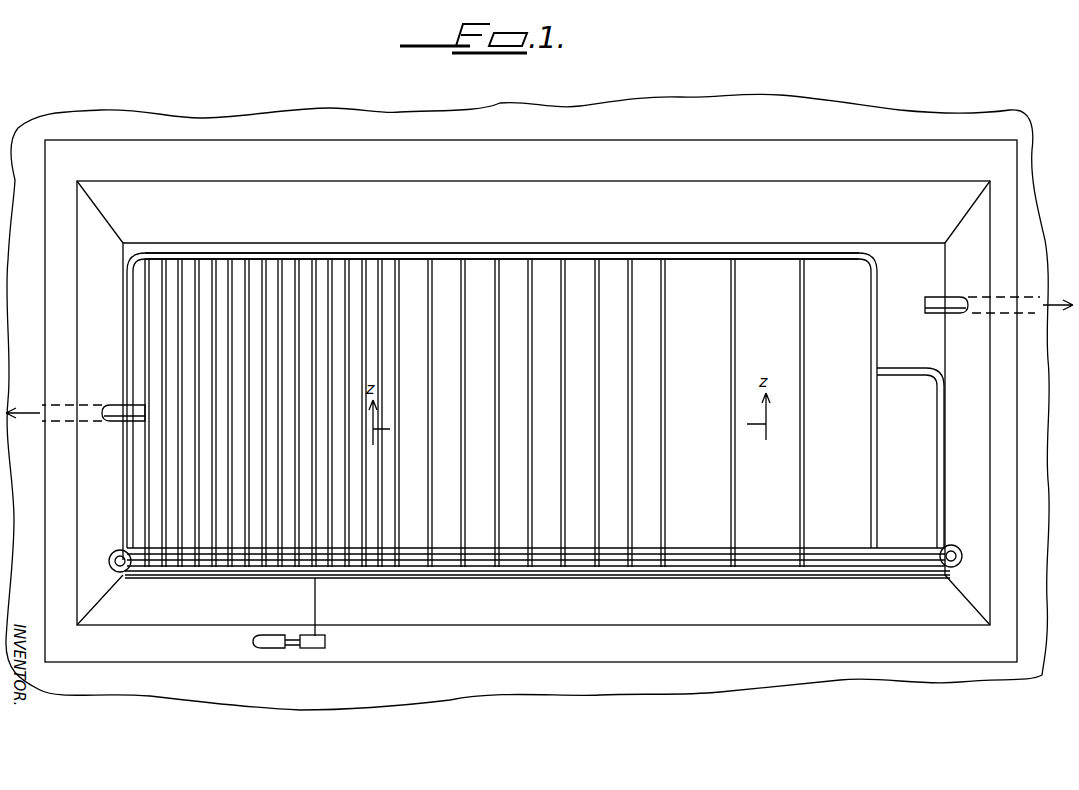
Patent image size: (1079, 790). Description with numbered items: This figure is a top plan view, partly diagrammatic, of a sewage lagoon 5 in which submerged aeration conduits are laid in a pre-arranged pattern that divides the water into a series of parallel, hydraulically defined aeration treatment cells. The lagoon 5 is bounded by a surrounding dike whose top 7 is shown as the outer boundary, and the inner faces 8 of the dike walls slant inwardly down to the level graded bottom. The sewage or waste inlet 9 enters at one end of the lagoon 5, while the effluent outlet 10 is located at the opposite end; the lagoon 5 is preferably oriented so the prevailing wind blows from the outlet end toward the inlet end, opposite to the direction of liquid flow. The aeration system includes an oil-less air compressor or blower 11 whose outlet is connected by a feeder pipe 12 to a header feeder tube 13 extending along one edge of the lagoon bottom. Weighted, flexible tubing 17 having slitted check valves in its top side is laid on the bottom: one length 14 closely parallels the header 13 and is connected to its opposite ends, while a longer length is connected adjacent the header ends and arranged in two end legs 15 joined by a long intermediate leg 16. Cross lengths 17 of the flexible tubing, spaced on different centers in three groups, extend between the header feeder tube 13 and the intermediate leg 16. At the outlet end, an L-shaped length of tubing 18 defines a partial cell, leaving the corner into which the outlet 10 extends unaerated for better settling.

The sewage lagoon 5 is at (776, 113).
The dike top 7 is at (870, 148).
The inner faces of dike walls 8 is at (641, 195).
The sewage inlet 9 is at (25, 401).
The effluent outlet 10 is at (1037, 295).
The air compressor or blower 11 is at (310, 660).
The feeder pipe 12 is at (312, 594).
The header feeder tube 13 is at (416, 579).
The tubing length 14 is at (513, 548).
The end legs 15 is at (128, 492).
The intermediate leg 16 is at (512, 258).
The flexible tubing cross lengths 17 is at (172, 345).
The L-shaped length of tubing 18 is at (940, 446).